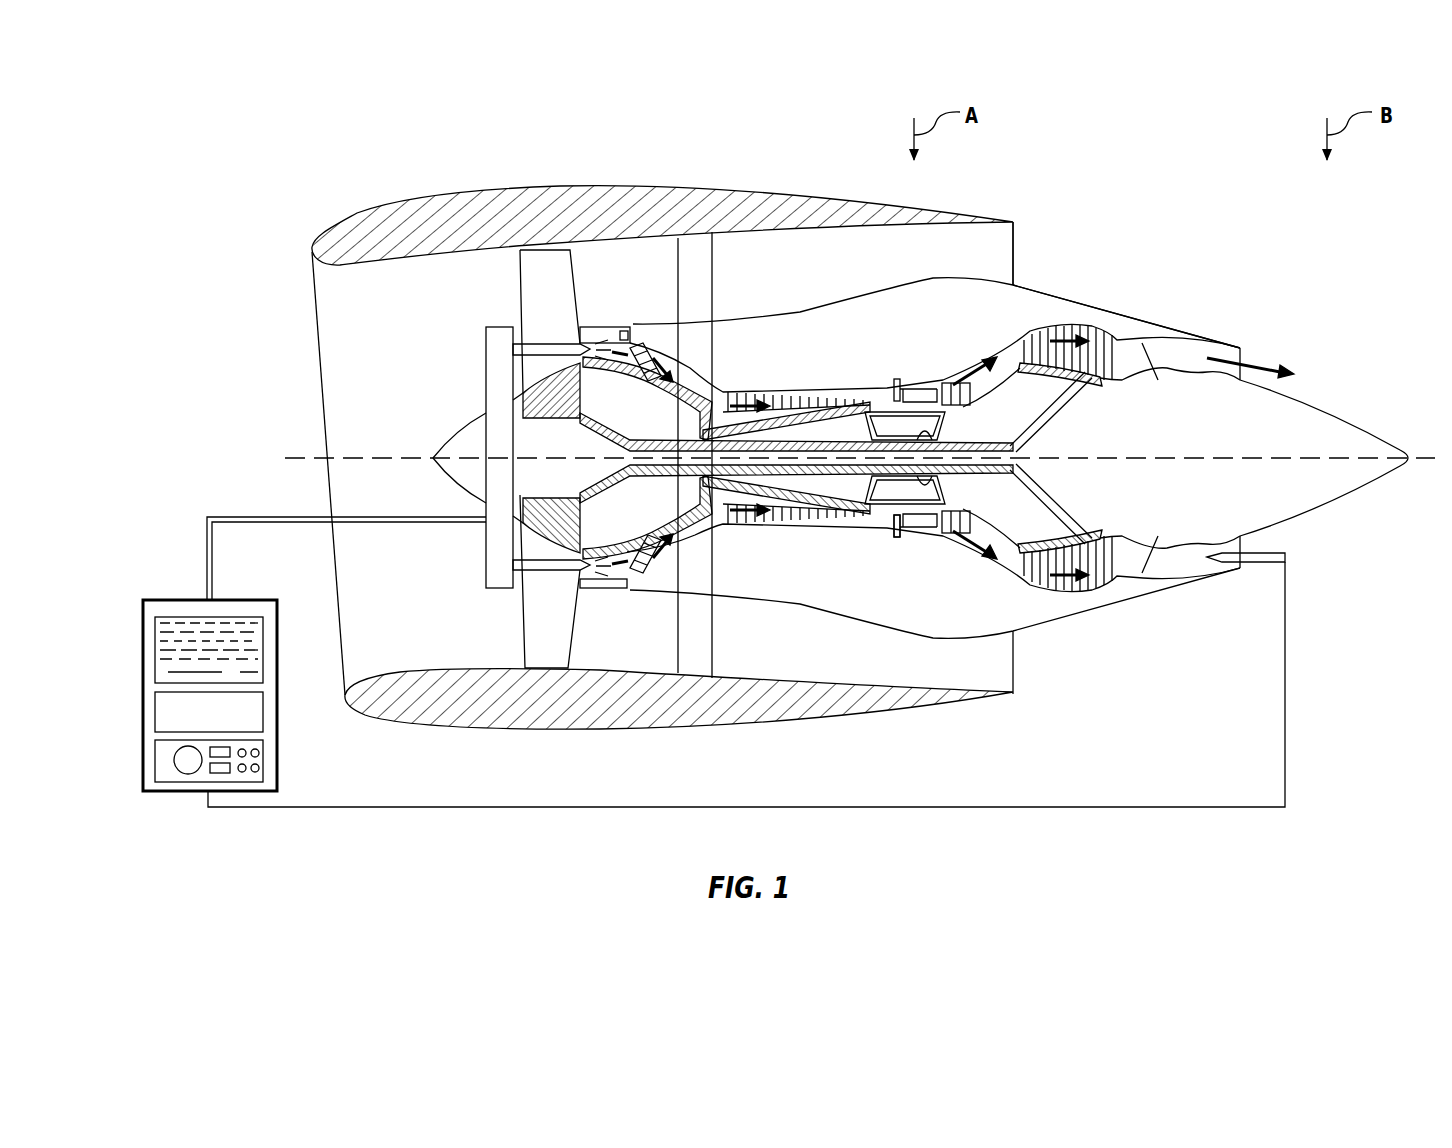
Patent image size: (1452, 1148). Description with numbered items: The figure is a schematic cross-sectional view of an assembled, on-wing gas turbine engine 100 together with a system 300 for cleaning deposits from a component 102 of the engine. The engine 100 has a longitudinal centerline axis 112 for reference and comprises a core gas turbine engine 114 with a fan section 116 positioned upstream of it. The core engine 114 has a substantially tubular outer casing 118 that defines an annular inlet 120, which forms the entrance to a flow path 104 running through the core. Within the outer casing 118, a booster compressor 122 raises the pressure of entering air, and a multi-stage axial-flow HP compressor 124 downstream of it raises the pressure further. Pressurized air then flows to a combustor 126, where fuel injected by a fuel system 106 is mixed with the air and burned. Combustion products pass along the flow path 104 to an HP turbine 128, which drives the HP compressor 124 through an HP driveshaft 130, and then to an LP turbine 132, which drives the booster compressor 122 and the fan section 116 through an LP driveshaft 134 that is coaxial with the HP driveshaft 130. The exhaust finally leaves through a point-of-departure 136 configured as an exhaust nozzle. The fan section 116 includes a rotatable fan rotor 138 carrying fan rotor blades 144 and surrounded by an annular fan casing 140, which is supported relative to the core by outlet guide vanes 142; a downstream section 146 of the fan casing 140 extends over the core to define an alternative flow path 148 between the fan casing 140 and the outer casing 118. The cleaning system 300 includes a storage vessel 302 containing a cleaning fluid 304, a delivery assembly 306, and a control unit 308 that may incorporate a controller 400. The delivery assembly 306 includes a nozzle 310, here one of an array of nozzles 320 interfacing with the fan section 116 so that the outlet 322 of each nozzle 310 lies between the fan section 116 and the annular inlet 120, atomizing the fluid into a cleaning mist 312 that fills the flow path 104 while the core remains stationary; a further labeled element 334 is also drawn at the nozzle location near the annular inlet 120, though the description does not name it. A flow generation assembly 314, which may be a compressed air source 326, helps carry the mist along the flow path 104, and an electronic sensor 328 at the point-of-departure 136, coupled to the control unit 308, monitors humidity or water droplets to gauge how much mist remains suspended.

The gas turbine engine 100 is at (1121, 203).
The component 102 is at (1107, 270).
The flow path 104 is at (730, 389).
The fuel system 106 is at (893, 542).
The longitudinal centerline axis 112 is at (1160, 456).
The core gas turbine engine 114 is at (877, 336).
The fan section 116 is at (563, 172).
The outer casing 118 is at (862, 622).
The annular inlet 120 is at (638, 318).
The booster compressor 122 is at (662, 543).
The high-pressure compressor 124 is at (743, 520).
The combustor 126 is at (915, 534).
The high-pressure turbine 128 is at (985, 530).
The high-pressure driveshaft 130 is at (948, 426).
The low-pressure turbine 132 is at (1088, 580).
The low-pressure driveshaft 134 is at (675, 441).
The point-of-departure 136 is at (1247, 353).
The fan rotor 138 is at (533, 497).
The fan casing 140 is at (555, 735).
The outlet guide vanes 142 is at (712, 277).
The fan rotor blades 144 is at (525, 650).
The downstream section 146 is at (958, 214).
The alternative flow path 148 is at (877, 277).
The system 300 is at (228, 483).
The storage vessel 302 is at (264, 650).
The cleaning fluid 304 is at (185, 630).
The delivery assembly 306 is at (456, 388).
The control unit 308 is at (168, 776).
The nozzle 310 is at (590, 342).
The cleaning mist 312 is at (614, 335).
The flow generation assembly 314 is at (254, 708).
The array of nozzles 320 is at (430, 549).
The outlet 322 is at (581, 595).
The compressed air source 326 is at (264, 737).
The electronic sensor 328 is at (1275, 553).
The sensor mount 334 is at (633, 326).
The controller 400 is at (202, 735).